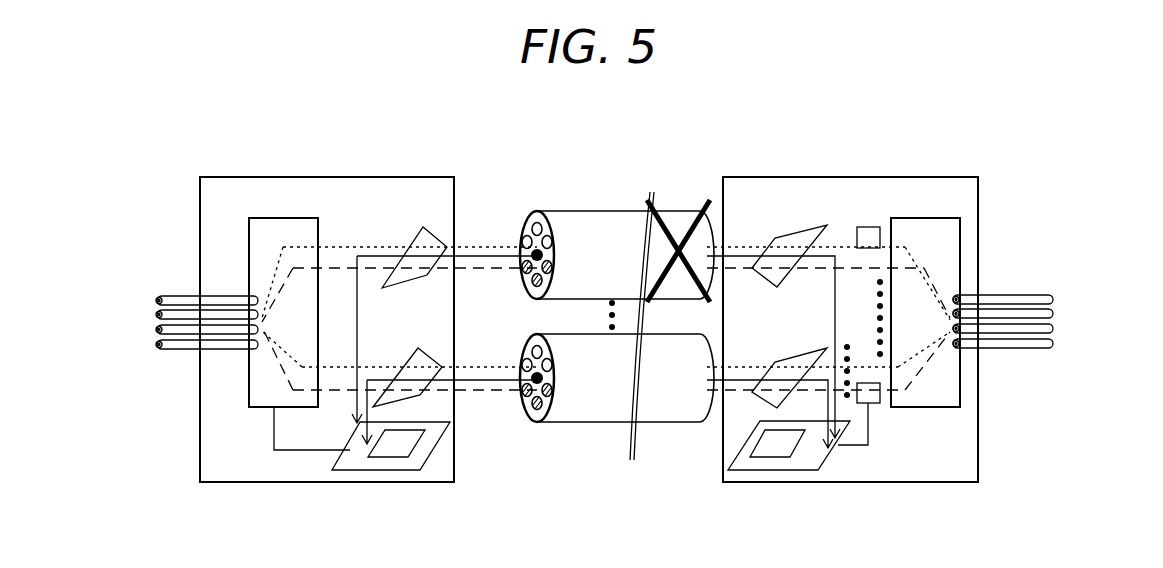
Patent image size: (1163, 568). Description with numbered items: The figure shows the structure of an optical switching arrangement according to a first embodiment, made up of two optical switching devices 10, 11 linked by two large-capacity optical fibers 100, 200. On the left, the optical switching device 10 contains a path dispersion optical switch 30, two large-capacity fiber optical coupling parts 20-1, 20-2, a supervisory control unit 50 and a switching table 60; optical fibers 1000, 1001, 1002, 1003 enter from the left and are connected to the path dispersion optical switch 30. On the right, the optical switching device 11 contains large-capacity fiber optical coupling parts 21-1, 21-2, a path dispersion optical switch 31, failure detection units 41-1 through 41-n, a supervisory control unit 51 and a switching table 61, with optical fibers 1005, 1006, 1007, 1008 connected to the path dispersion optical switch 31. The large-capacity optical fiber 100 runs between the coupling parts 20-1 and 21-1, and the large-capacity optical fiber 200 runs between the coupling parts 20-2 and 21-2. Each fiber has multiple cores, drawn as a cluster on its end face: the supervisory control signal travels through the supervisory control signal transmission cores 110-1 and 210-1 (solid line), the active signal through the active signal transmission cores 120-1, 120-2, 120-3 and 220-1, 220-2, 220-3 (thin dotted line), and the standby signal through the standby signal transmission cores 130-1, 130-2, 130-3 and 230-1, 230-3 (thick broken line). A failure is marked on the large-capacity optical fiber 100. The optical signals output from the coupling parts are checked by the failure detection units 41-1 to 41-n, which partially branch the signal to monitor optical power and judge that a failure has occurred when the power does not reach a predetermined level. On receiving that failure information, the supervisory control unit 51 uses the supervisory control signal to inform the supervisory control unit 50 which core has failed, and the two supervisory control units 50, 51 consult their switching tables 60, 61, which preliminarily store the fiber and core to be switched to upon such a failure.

The optical switching device 10 is at (247, 185).
The optical switching device 11 is at (908, 185).
The path dispersion optical switch 30 is at (255, 265).
The path dispersion optical switch 31 is at (935, 230).
The large-capacity fiber optical coupling part 20-1 is at (425, 240).
The large-capacity fiber optical coupling part 20-2 is at (418, 365).
The large-capacity fiber optical coupling part 21-1 is at (792, 240).
The large-capacity fiber optical coupling part 21-2 is at (798, 362).
The failure detection unit 41-1 is at (866, 227).
The failure detection unit 41-n is at (875, 405).
The supervisory control unit 50 is at (353, 462).
The supervisory control unit 51 is at (808, 462).
The switching table 60 is at (398, 445).
The switching table 61 is at (768, 452).
The large-capacity optical fiber 100 is at (680, 215).
The large-capacity optical fiber 200 is at (658, 410).
The supervisory control signal transmission core 110-1 is at (541, 256).
The active signal transmission core 120-1 is at (552, 242).
The active signal transmission core 120-2 is at (537, 222).
The active signal transmission core 120-3 is at (522, 242).
The standby signal transmission core 130-1 is at (552, 268).
The standby signal transmission core 130-2 is at (540, 285).
The standby signal transmission core 130-3 is at (522, 268).
The supervisory control signal transmission core 210-1 is at (535, 415).
The active signal transmission core 220-1 is at (552, 366).
The active signal transmission core 220-2 is at (542, 352).
The active signal transmission core 220-3 is at (522, 365).
The standby signal transmission core 230-1 is at (552, 391).
The standby signal transmission core 230-3 is at (522, 392).
The optical fiber 1000 is at (157, 299).
The optical fiber 1001 is at (157, 314).
The optical fiber 1002 is at (157, 330).
The optical fiber 1003 is at (157, 345).
The optical fiber 1005 is at (1053, 299).
The optical fiber 1006 is at (1053, 313).
The optical fiber 1007 is at (1053, 328).
The optical fiber 1008 is at (1053, 344).